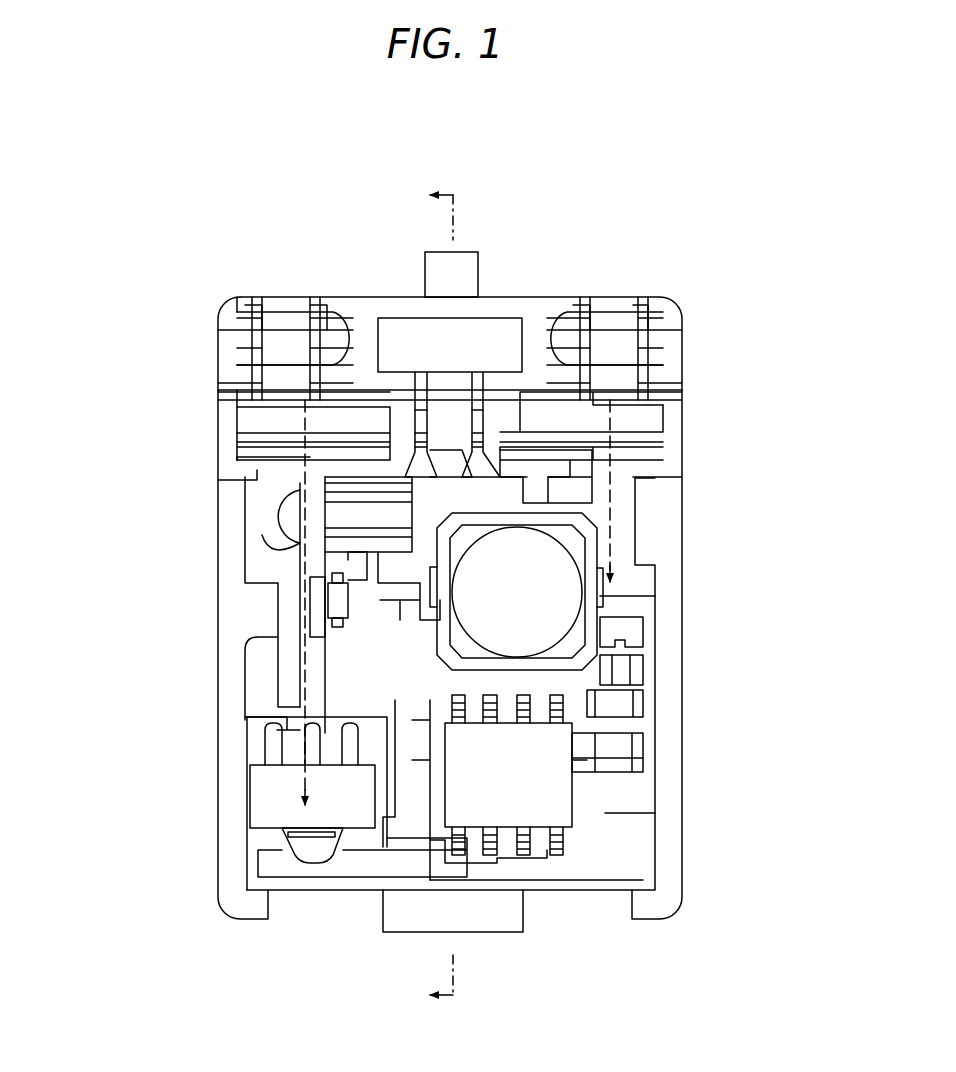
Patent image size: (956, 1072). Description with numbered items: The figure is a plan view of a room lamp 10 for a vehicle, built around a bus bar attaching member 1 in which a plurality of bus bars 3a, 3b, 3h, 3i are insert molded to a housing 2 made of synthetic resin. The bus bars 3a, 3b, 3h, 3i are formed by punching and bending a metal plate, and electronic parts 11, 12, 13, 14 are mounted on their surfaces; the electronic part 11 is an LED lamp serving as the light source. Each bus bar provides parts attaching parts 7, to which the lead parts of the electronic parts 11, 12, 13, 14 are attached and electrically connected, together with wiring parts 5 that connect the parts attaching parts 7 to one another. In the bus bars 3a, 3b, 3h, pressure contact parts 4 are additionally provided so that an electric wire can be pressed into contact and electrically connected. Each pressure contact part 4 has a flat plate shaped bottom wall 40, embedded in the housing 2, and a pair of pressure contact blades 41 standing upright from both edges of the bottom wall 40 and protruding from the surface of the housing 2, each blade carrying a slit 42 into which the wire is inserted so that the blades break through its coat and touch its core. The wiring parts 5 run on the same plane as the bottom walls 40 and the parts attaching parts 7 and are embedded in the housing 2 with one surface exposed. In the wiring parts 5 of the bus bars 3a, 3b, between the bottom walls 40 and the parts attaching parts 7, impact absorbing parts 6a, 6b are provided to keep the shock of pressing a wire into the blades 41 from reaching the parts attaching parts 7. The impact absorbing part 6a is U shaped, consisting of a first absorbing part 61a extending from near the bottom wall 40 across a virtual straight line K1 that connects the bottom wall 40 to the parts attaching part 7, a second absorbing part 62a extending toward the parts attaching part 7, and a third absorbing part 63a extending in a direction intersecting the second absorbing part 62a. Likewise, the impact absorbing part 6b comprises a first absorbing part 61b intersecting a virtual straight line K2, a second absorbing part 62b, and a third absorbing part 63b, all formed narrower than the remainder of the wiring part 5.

The bus bar attaching member 1 is at (673, 908).
The housing 2 is at (668, 855).
The bus bar 3a is at (276, 677).
The bus bar 3b is at (662, 702).
The bus bar 3h is at (418, 462).
The bus bar 3i is at (433, 752).
The pressure contact part 4 is at (250, 320).
The wiring part 5 is at (280, 628).
The impact absorbing part 6a is at (130, 385).
The impact absorbing part 6b is at (760, 385).
The parts attaching part 7 is at (342, 482).
The room lamp for a vehicle 10 is at (543, 165).
The electronic part 11 is at (600, 645).
The electronic part 12 is at (558, 810).
The electronic part 13 is at (262, 817).
The electronic part 14 is at (378, 522).
The bottom wall 40 is at (280, 342).
The pressure contact blade 41 is at (257, 393).
The slit 42 is at (247, 325).
The first absorbing part 61a is at (222, 390).
The second absorbing part 62a is at (237, 428).
The third absorbing part 63a is at (257, 478).
The first absorbing part 61b is at (640, 393).
The second absorbing part 62b is at (672, 426).
The third absorbing part 63b is at (645, 478).
The virtual straight line K1 is at (300, 530).
The virtual straight line K2 is at (612, 512).